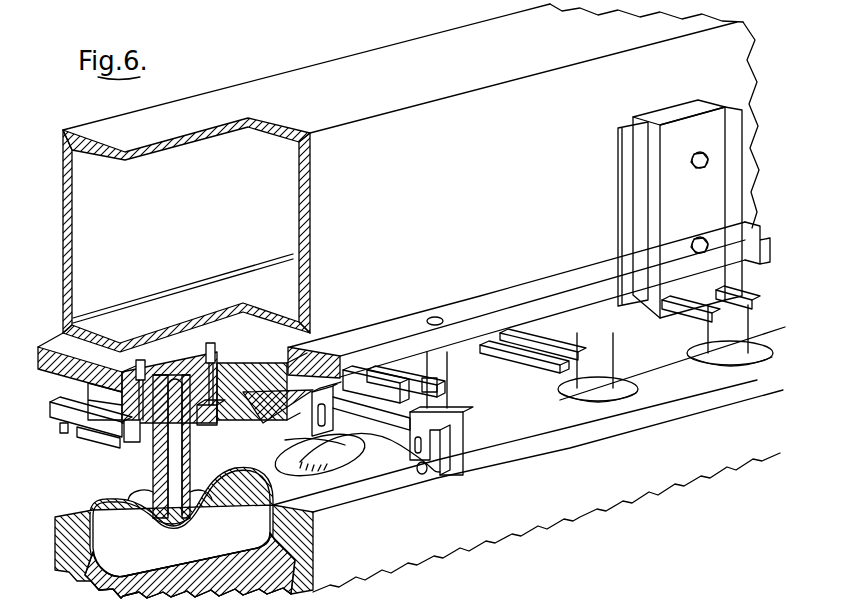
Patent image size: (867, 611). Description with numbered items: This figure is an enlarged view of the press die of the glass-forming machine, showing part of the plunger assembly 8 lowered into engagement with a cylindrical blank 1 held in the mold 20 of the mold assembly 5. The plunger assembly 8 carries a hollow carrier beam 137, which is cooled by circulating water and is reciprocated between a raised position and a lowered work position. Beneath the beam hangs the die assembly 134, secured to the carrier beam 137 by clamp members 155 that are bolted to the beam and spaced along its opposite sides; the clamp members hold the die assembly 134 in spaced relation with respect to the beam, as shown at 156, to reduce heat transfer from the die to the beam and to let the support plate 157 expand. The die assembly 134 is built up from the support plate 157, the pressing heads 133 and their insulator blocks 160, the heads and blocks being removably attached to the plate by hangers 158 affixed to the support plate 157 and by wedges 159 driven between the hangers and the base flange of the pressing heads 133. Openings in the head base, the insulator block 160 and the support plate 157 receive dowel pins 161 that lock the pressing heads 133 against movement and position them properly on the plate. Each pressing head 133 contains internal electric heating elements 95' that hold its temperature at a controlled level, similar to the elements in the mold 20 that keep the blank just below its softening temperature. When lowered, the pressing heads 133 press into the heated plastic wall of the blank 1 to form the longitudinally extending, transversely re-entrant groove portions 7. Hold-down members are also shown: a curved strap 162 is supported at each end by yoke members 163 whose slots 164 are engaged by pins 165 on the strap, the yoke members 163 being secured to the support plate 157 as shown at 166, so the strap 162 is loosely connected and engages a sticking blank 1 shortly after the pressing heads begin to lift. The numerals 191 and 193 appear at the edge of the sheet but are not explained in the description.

The carrier beam 137 is at (212, 96).
The plunger assembly 8 is at (105, 111).
The clamp members 155 is at (702, 106).
The spaced relation 156 is at (630, 267).
The support plate 157 is at (55, 345).
The dowel pins 161 is at (208, 345).
The insulator blocks 160 is at (90, 390).
The die assembly 134 is at (72, 389).
The wedges 159 is at (59, 428).
The hangers 158 is at (120, 443).
The internal electric heating elements 95' is at (153, 447).
The pressing heads 133 is at (157, 475).
The blank 1 is at (97, 497).
The re-entrant groove portions 7 is at (303, 467).
The yoke members 163 is at (313, 413).
The slots 164 is at (409, 438).
The pins 165 is at (422, 472).
The curved strap 162 is at (450, 468).
The mold 20 is at (373, 560).
The mold assembly 5 is at (526, 534).
The securing point of yoke members 166 is at (440, 320).
The rail part 191 is at (310, 606).
The rail part 193 is at (494, 606).